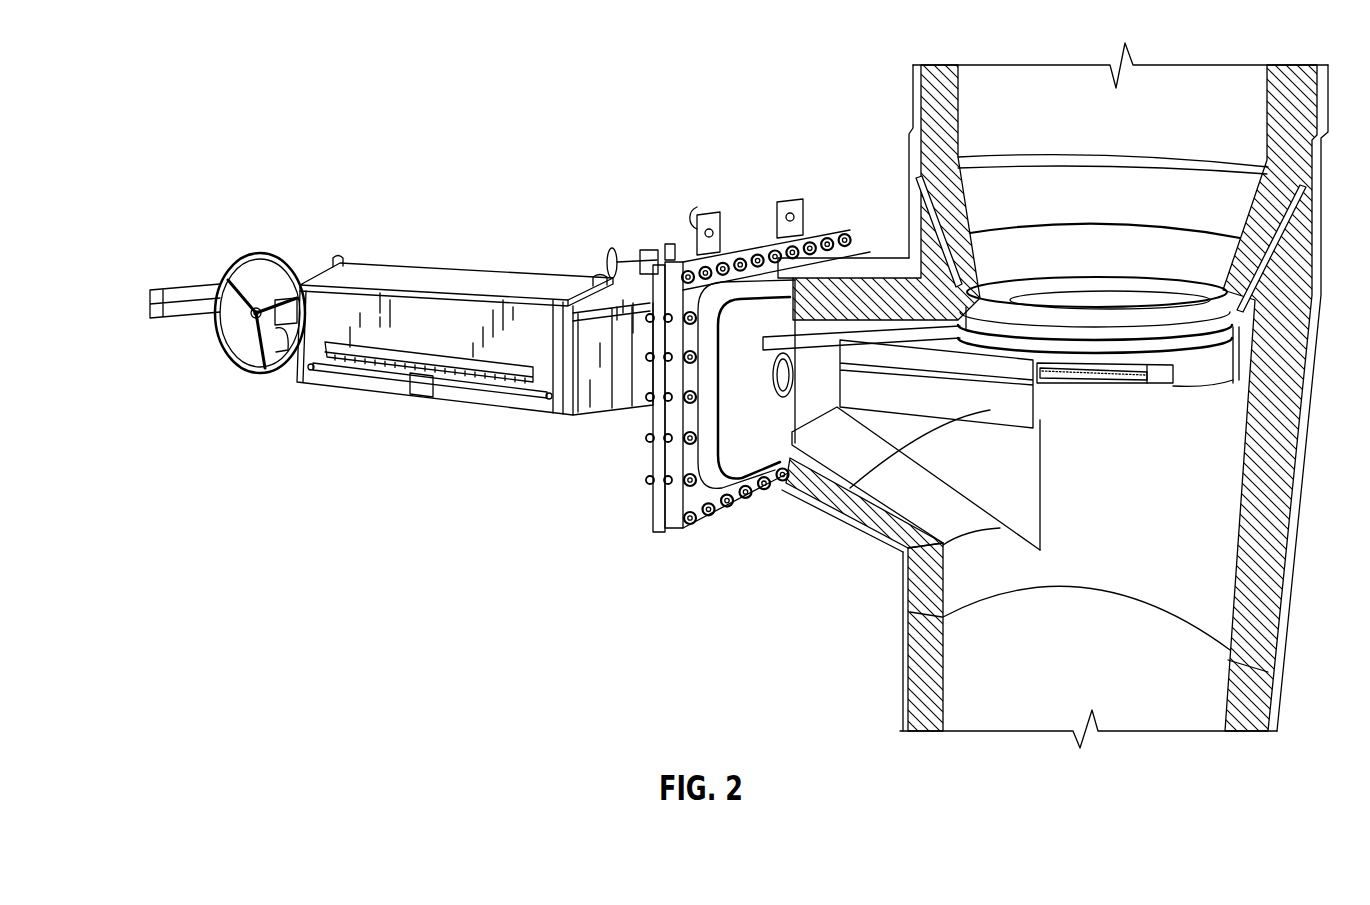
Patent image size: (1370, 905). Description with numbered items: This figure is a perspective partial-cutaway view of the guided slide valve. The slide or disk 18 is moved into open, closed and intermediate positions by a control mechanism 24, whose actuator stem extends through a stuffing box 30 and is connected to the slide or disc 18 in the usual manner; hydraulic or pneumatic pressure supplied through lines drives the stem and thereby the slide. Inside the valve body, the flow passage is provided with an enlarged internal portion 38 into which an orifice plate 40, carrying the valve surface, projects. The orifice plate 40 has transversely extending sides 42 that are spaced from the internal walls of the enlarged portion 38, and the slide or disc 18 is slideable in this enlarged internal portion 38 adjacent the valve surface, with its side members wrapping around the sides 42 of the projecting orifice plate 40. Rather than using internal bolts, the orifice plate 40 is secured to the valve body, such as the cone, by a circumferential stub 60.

The slide or disk 18 is at (850, 497).
The control mechanism 24 is at (413, 272).
The stuffing box 30 is at (633, 398).
The enlarged internal portion 38 is at (952, 512).
The orifice plate 40 is at (1268, 415).
The transversely extending sides 42 is at (1152, 383).
The circumferential stub 60 is at (1207, 371).